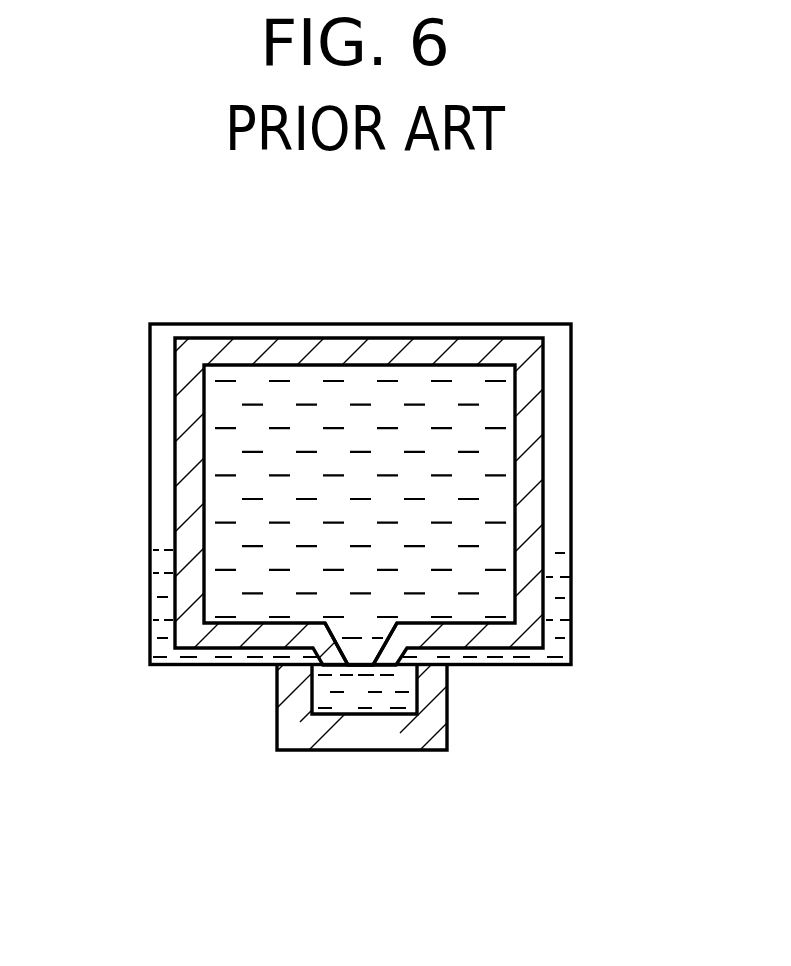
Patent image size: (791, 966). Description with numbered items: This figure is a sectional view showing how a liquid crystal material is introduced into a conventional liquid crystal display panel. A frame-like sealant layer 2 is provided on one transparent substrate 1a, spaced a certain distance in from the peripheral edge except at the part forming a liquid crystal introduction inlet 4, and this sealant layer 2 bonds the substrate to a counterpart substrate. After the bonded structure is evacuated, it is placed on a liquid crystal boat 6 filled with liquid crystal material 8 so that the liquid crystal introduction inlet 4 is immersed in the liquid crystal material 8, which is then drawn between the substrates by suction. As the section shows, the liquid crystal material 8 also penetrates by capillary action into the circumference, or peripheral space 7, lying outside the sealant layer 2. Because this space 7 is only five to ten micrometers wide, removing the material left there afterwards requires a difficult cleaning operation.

The transparent substrate 1a is at (160, 352).
The sealant layer 2 is at (528, 428).
The circumference (peripheral space) 7 is at (553, 498).
The liquid crystal boat 6 is at (438, 717).
The liquid crystal material 8 is at (330, 697).
The liquid crystal introduction inlet 4 is at (362, 672).